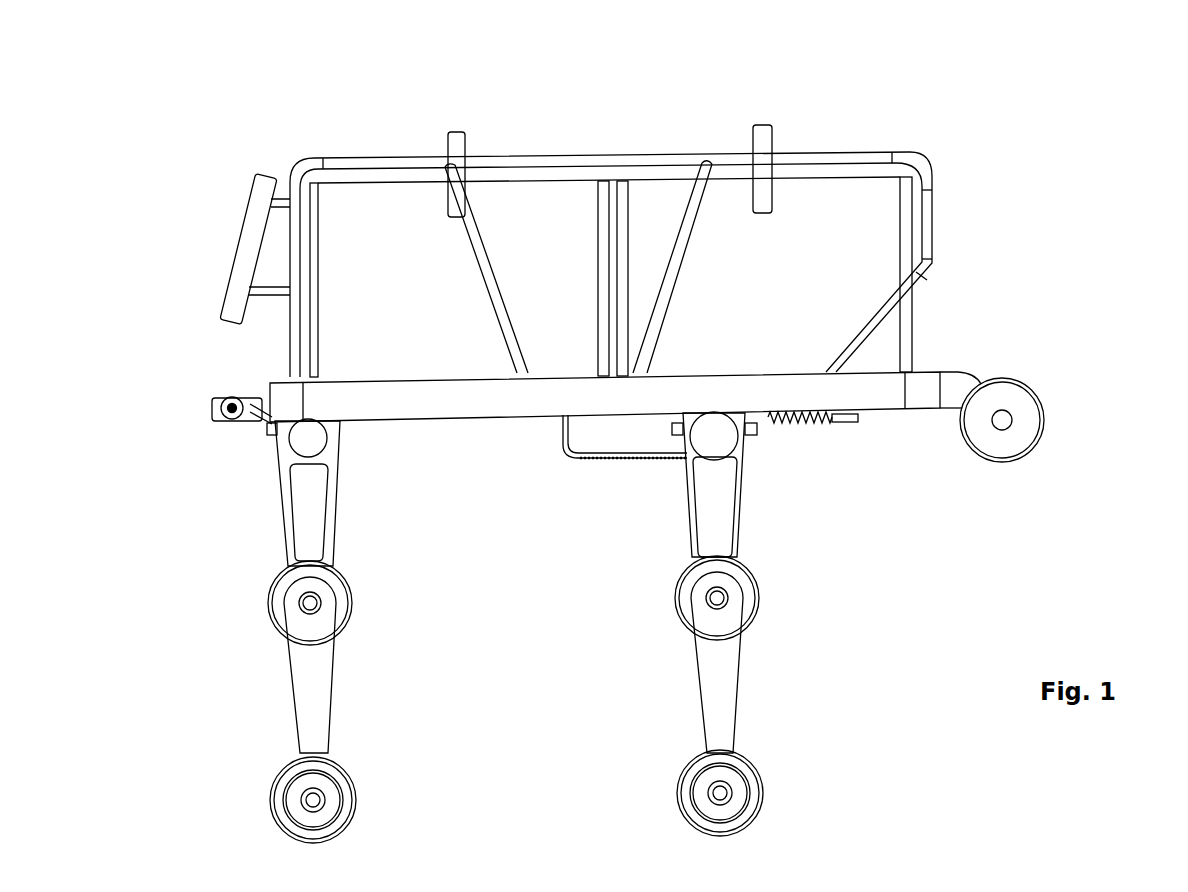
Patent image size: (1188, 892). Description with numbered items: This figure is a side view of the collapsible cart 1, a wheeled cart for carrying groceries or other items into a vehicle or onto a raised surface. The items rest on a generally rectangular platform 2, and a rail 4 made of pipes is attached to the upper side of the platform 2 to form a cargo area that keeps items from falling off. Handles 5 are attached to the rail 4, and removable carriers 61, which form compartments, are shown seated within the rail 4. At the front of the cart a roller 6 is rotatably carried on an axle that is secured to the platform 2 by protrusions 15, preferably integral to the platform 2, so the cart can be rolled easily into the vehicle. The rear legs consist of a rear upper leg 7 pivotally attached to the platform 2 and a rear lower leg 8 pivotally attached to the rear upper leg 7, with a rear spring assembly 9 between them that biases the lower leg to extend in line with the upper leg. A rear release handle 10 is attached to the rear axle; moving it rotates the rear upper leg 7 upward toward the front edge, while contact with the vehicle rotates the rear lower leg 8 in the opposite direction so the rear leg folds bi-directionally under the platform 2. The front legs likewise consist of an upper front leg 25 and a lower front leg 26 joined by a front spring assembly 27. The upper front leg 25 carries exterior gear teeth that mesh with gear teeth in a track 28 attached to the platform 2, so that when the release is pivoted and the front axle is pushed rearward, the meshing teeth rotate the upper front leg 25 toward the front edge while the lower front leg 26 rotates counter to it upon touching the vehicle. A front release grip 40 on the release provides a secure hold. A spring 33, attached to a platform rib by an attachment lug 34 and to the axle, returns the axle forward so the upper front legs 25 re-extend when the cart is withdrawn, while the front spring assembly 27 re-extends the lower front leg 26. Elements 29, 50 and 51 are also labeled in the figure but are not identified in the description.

The collapsible cart 1 is at (220, 462).
The platform 2 is at (423, 397).
The rail 4 is at (672, 153).
The handles 5 is at (237, 213).
The roller 6 is at (1025, 428).
The rear upper leg 7 is at (340, 495).
The rear lower leg 8 is at (310, 683).
The rear spring assembly 9 is at (352, 585).
The rear release handle 10 is at (208, 413).
The protrusions 15 is at (955, 392).
The upper front leg 25 is at (688, 495).
The lower front leg 26 is at (718, 687).
The front spring assembly 27 is at (673, 603).
The track 28 is at (748, 457).
The spring 29 is at (597, 460).
The spring 33 is at (822, 420).
The attachment lug 34 is at (857, 420).
The front release grip 40 is at (210, 402).
The rear ground wheel 50 is at (763, 780).
The front ground wheel 51 is at (355, 787).
The removable carriers 61 is at (660, 212).